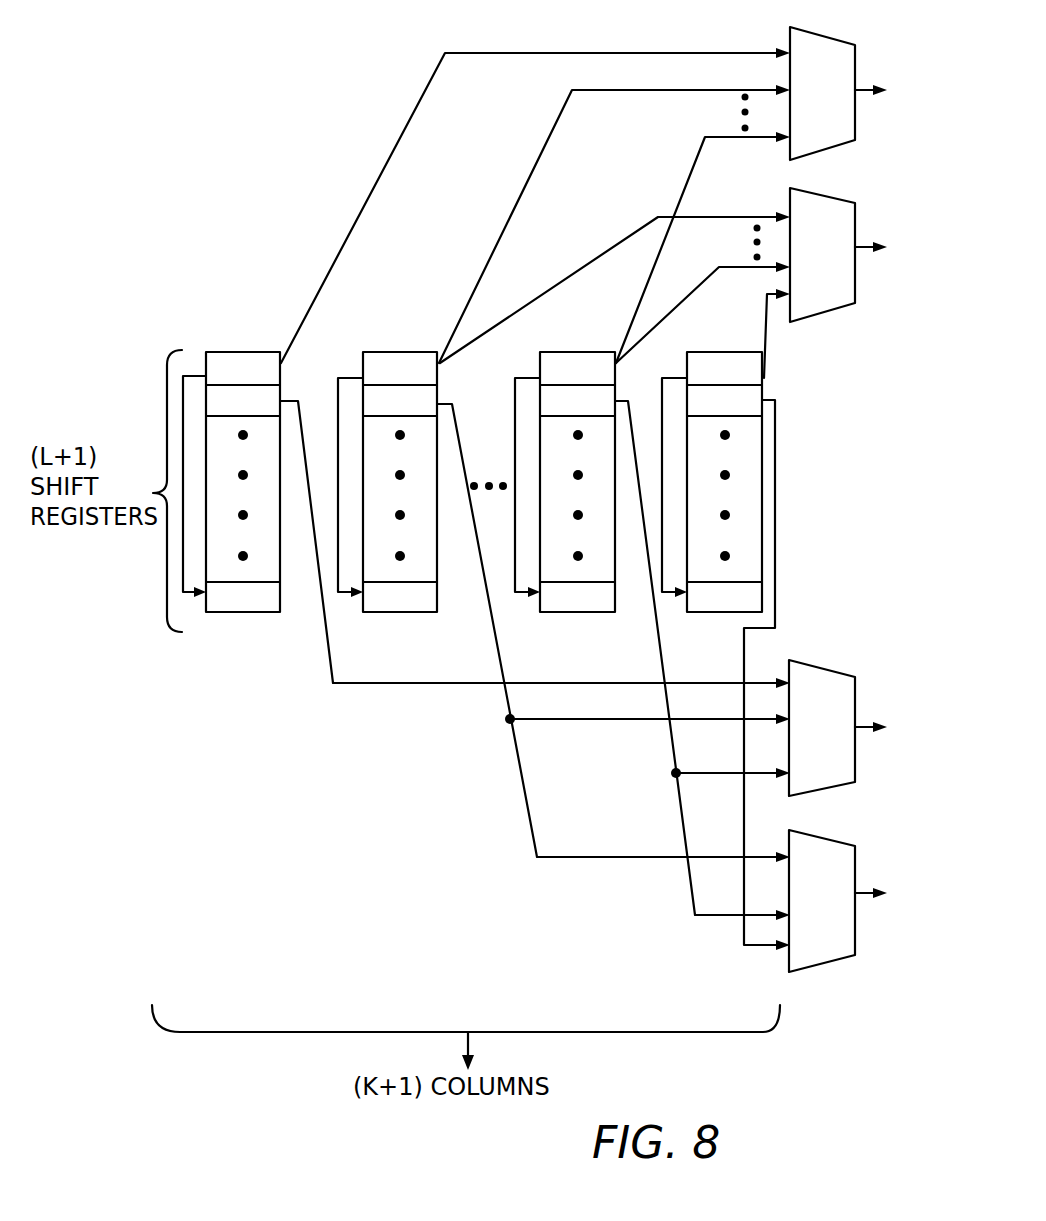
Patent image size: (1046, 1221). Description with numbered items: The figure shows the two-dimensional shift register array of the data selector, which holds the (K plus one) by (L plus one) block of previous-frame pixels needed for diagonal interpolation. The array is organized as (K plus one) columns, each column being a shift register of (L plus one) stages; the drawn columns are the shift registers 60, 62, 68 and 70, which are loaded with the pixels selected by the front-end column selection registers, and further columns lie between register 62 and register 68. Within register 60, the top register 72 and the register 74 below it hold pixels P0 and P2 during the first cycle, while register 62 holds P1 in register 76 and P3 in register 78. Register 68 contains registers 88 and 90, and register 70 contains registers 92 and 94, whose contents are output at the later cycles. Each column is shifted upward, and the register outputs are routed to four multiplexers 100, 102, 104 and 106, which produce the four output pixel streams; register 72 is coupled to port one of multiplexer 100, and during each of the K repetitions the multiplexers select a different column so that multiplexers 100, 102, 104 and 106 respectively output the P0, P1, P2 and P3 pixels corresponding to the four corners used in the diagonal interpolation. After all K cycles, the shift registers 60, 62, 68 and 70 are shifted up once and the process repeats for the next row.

The register 60 is at (243, 614).
The register 62 is at (400, 614).
The register 68 is at (580, 614).
The register 70 is at (706, 614).
The register 72 is at (236, 354).
The register 74 is at (277, 399).
The register 76 is at (373, 360).
The register 78 is at (437, 403).
The register 88 is at (578, 360).
The register 90 is at (613, 405).
The register 92 is at (755, 368).
The register 94 is at (760, 394).
The multiplexer 100 is at (822, 143).
The multiplexer 102 is at (823, 298).
The multiplexer 104 is at (833, 776).
The multiplexer 106 is at (826, 955).